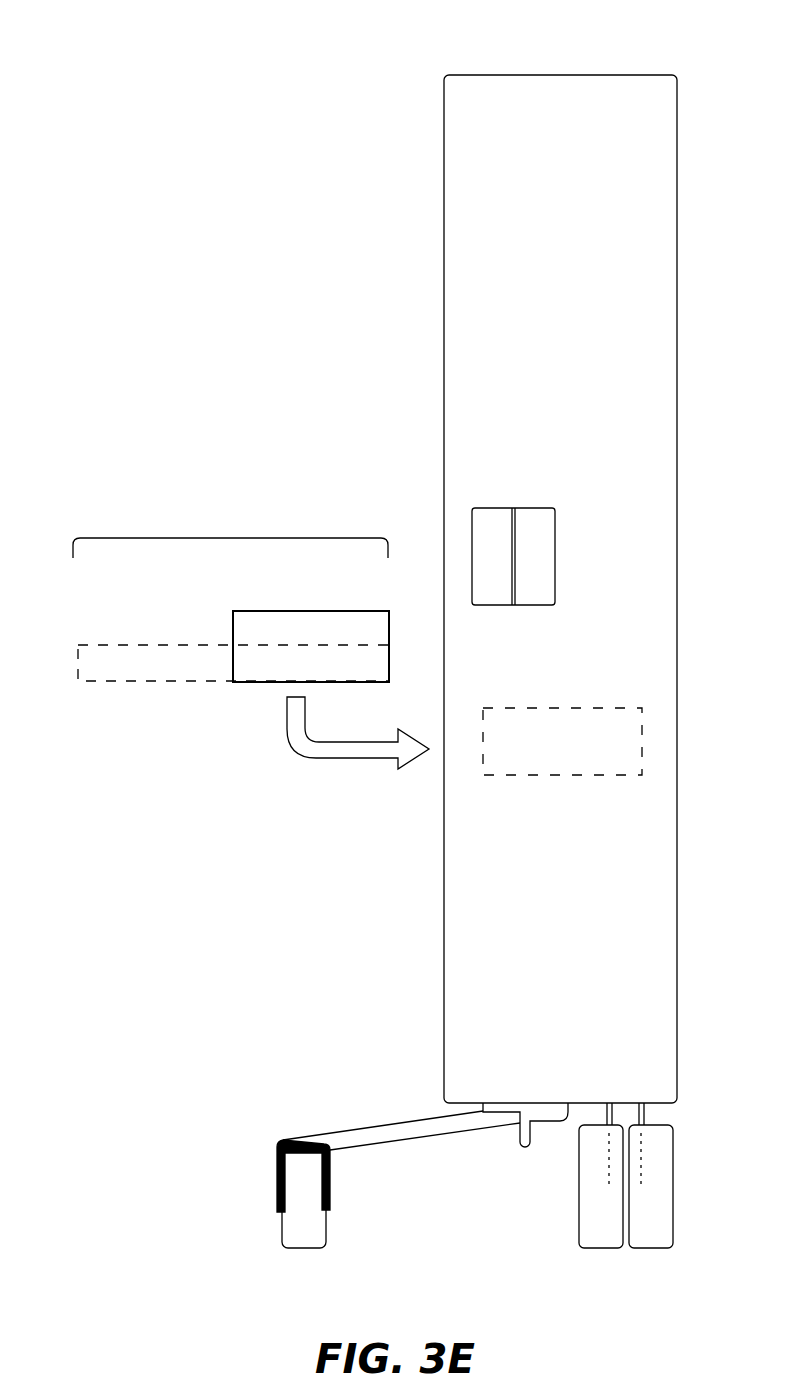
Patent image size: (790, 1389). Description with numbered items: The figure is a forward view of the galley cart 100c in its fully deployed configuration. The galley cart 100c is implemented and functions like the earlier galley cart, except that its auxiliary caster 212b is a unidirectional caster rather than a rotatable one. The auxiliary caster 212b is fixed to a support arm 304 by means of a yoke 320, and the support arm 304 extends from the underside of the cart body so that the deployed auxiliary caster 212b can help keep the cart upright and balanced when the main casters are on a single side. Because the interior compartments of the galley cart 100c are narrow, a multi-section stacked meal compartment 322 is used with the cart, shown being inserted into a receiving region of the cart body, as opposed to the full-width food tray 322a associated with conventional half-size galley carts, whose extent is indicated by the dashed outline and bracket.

The galley cart 100c is at (140, 78).
The full-width food tray 322a is at (237, 537).
The multi-section stacked meal compartment 322 is at (270, 672).
The support arm 304 is at (400, 1130).
The yoke 320 is at (330, 1167).
The auxiliary caster 212b is at (318, 1257).